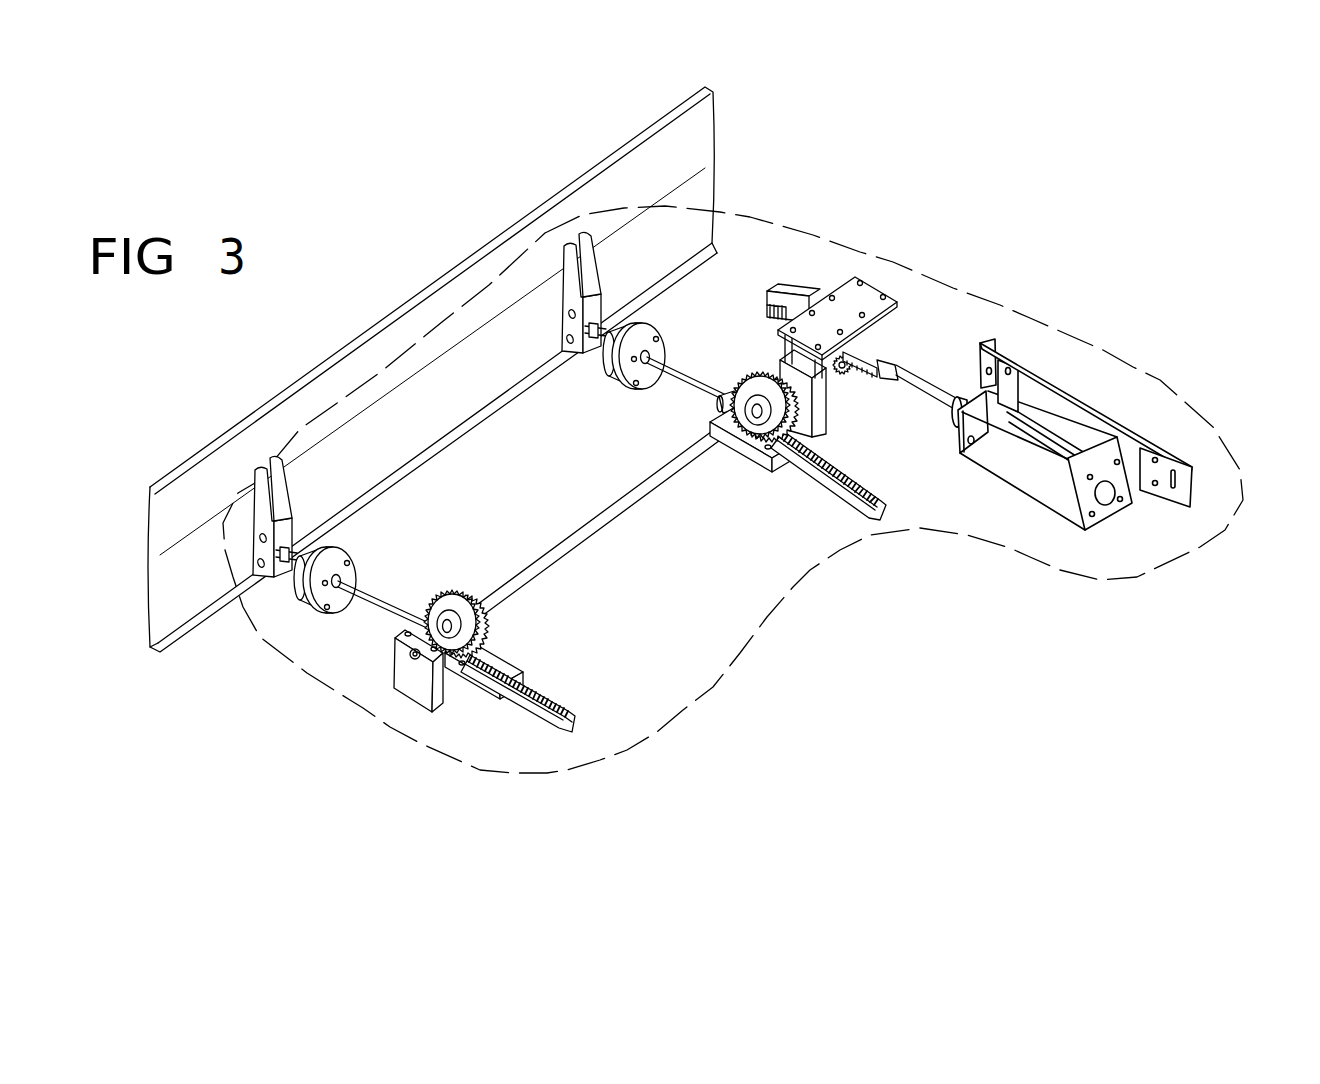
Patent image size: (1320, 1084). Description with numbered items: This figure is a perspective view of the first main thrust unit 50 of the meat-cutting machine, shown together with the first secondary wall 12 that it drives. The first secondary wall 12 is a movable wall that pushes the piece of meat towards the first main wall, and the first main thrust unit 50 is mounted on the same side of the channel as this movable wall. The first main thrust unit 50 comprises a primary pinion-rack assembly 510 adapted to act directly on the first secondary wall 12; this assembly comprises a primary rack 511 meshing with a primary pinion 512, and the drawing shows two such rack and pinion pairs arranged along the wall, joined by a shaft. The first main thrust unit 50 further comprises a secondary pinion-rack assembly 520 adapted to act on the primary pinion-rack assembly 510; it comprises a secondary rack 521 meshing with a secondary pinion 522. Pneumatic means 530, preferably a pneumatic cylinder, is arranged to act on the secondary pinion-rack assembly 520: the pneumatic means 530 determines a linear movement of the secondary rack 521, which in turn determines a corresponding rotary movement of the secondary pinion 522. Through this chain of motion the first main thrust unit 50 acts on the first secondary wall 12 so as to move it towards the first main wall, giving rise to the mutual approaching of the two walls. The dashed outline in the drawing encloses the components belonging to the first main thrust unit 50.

The first secondary wall 12 is at (393, 305).
The first main thrust unit 50 is at (1002, 548).
The primary pinion-rack assembly 510 is at (745, 472).
The primary rack 511 is at (843, 497).
The primary pinion 512 is at (357, 598).
The secondary pinion-rack assembly 520 is at (908, 340).
The secondary rack 521 is at (882, 385).
The secondary pinion 522 is at (863, 372).
The pneumatic means 530 is at (1110, 393).